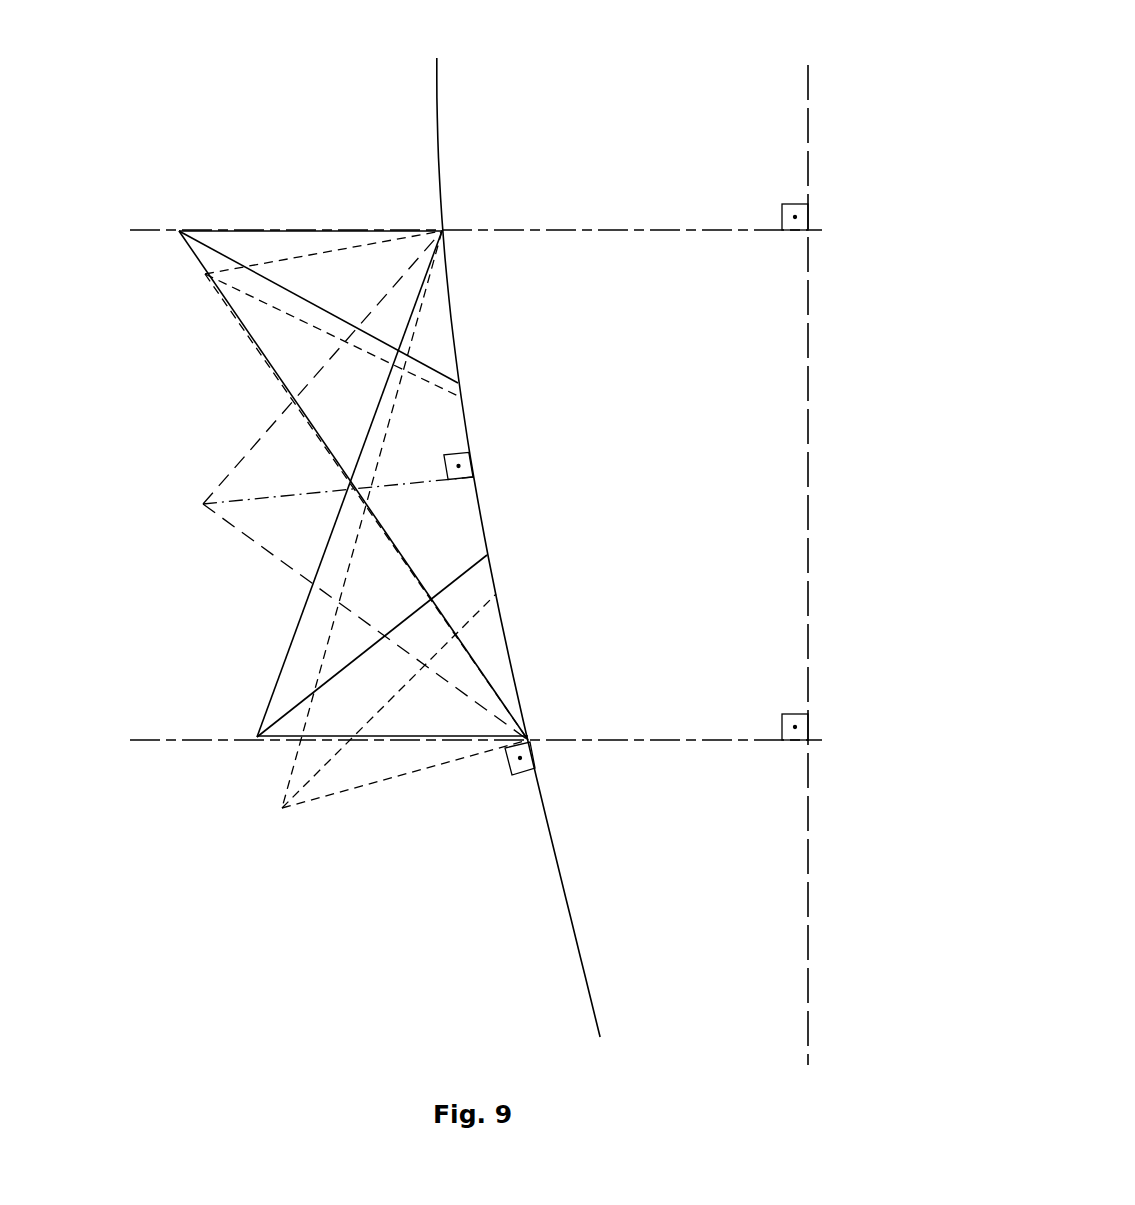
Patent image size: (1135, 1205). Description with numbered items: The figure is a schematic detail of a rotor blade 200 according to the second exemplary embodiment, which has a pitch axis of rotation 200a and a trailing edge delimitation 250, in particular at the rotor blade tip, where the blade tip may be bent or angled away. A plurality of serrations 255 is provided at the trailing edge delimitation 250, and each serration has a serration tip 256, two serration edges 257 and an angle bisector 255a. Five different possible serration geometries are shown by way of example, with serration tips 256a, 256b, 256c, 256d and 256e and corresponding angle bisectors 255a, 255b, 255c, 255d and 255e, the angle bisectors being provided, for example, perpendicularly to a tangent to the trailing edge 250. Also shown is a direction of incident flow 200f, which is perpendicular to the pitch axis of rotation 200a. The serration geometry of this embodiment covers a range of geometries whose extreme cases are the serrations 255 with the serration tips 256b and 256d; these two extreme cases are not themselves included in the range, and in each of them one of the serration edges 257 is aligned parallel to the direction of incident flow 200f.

The rotor blade 200 is at (736, 110).
The pitch axis of rotation 200a is at (808, 127).
The direction of incident flow 200f is at (590, 230).
The trailing edge delimitation 250 is at (438, 137).
The serrations 255 is at (172, 236).
The angle bisector 255a is at (248, 500).
The angle bisector 255b is at (375, 305).
The angle bisector 255c is at (253, 302).
The angle bisector 255d is at (470, 560).
The angle bisector 255e is at (470, 613).
The serration tip 256 is at (257, 737).
The serration tip 256a is at (203, 504).
The serration tip 256b is at (179, 231).
The serration tip 256c is at (205, 274).
The serration tip 256d is at (257, 737).
The serration tip 256e is at (282, 808).
The serration edges 257 is at (253, 443).